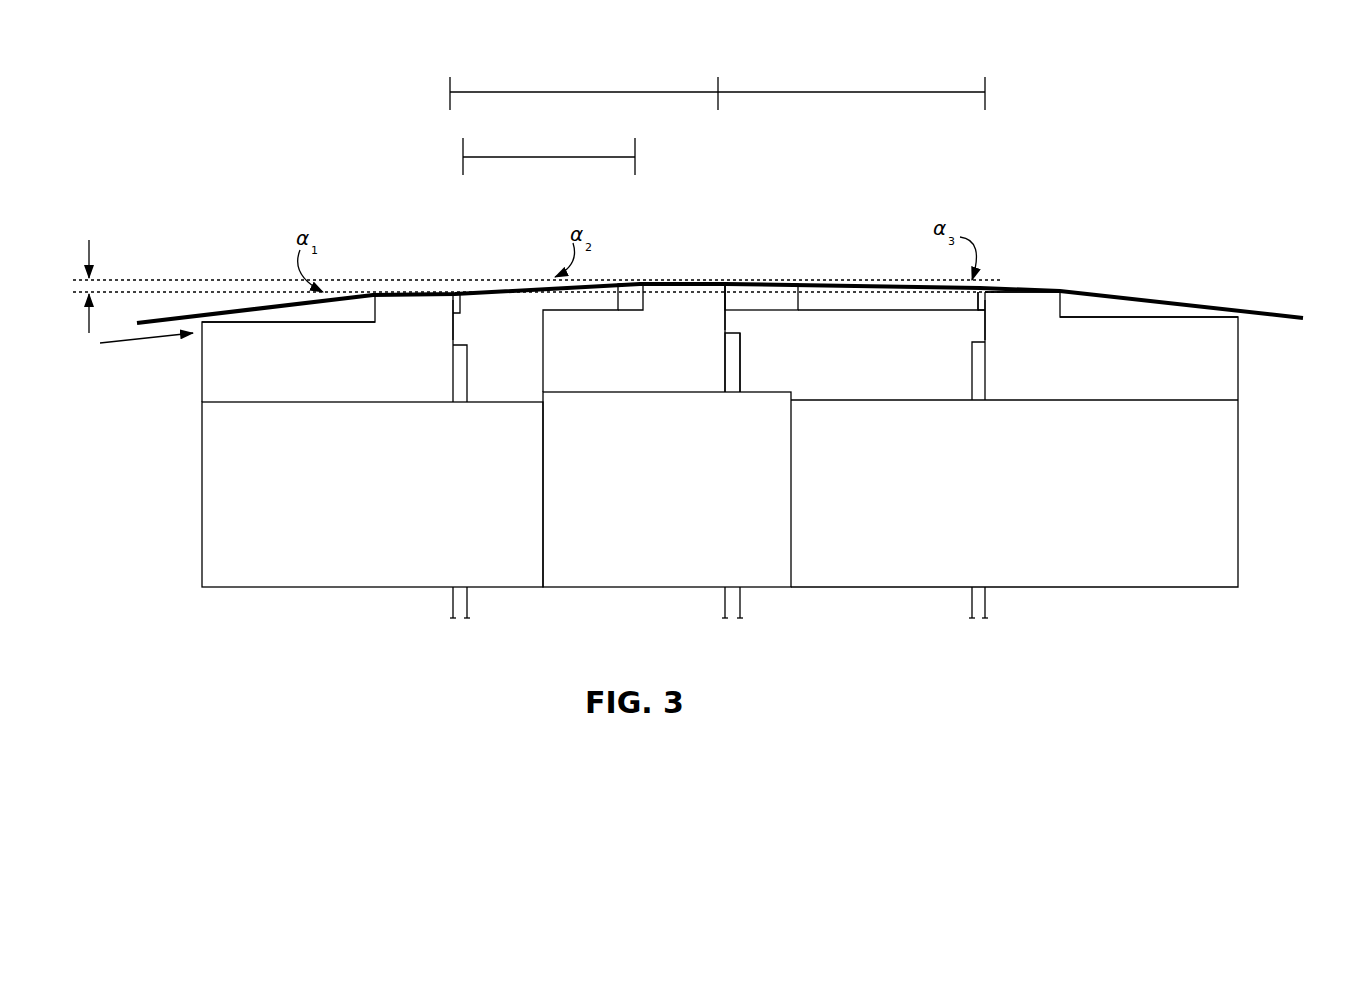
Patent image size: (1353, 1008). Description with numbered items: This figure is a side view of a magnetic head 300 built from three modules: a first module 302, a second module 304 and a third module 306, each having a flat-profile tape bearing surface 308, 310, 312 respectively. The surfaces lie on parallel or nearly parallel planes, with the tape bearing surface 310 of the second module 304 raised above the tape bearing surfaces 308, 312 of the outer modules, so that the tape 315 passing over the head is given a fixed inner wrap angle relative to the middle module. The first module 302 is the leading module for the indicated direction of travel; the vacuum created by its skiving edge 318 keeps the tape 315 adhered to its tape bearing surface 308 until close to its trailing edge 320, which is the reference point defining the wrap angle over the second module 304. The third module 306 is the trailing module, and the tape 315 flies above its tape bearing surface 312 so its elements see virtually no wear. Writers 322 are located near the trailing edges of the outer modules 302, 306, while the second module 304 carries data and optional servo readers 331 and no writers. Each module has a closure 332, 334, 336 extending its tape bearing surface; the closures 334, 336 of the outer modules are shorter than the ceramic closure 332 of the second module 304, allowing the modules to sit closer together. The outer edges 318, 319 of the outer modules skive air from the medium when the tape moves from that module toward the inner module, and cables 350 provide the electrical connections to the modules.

The magnetic head 300 is at (362, 167).
The first module 302 is at (202, 367).
The second module 304 is at (618, 306).
The third module 306 is at (1238, 365).
The tape bearing surface 308 is at (425, 290).
The tape bearing surface 310 is at (670, 282).
The tape bearing surface 312 is at (1015, 285).
The tape 315 is at (1113, 298).
The skiving edge 318 is at (370, 305).
The outer edge 319 is at (1068, 303).
The trailing edge 320 is at (468, 302).
The writers 322 is at (453, 288).
The data and optional servo readers 331 is at (723, 281).
The closure 332 is at (768, 311).
The closure 334 is at (463, 308).
The closure 336 is at (978, 298).
The cables 350 is at (470, 603).